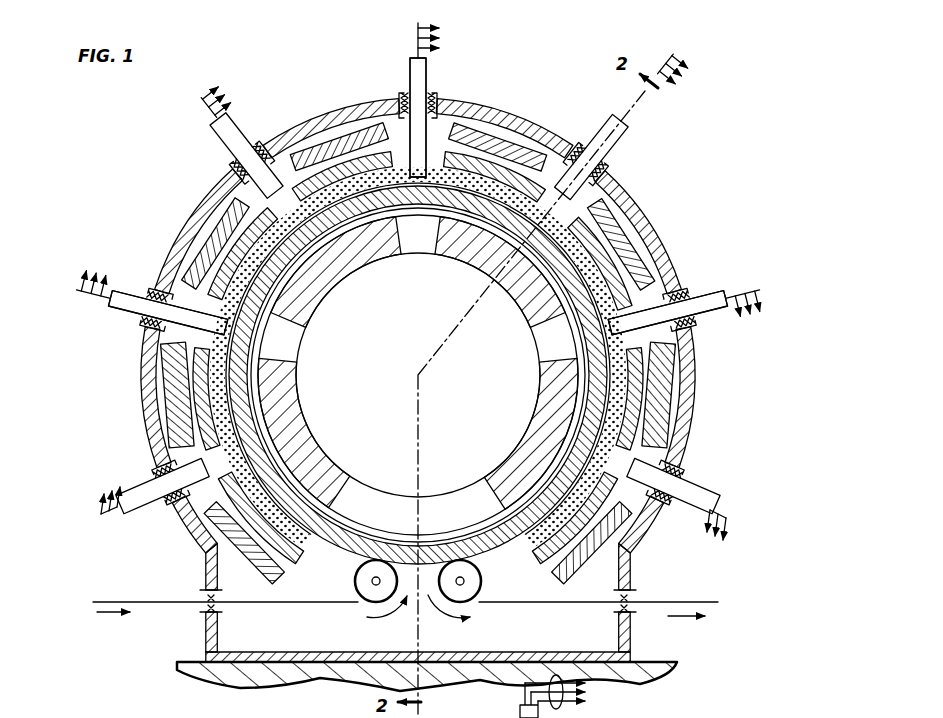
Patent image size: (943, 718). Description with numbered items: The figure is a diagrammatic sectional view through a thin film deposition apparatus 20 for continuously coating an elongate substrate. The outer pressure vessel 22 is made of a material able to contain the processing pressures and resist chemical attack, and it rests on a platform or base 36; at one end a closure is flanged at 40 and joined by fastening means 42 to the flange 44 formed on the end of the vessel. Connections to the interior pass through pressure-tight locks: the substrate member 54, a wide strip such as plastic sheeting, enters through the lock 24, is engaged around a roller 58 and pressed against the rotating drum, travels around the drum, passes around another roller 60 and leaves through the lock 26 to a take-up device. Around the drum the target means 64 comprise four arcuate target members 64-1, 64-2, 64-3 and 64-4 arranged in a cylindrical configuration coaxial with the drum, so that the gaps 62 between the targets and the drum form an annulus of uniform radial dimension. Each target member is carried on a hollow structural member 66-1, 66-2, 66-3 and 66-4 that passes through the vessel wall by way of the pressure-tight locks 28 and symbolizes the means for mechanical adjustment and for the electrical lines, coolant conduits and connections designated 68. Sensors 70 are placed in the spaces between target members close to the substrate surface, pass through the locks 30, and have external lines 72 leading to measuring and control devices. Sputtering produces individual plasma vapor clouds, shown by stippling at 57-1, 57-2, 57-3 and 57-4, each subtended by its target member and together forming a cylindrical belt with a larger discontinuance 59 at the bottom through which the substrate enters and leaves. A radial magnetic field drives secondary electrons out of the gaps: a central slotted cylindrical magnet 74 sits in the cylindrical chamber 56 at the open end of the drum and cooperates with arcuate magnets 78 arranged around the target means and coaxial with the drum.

The apparatus 20 is at (745, 165).
The pressure vessel 22 is at (511, 118).
The pressure-tight lock 24 is at (200, 606).
The pressure-tight lock 26 is at (640, 612).
The pressure-tight locks 28 is at (240, 162).
The pressure-tight locks 30 is at (408, 92).
The base 36 is at (200, 658).
The flange 40 is at (412, 696).
The fastening means 42 is at (349, 711).
The flange 44 is at (304, 717).
The substrate member 54 is at (108, 600).
The cylindrical chamber 56 is at (360, 218).
The plasma vapor cloud segment 57-1 is at (306, 468).
The plasma vapor cloud segment 57-2 is at (342, 268).
The plasma vapor cloud segment 57-3 is at (507, 268).
The plasma vapor cloud segment 57-4 is at (540, 440).
The roller 58 is at (372, 600).
The discontinuance 59 is at (317, 563).
The roller 60 is at (470, 598).
The gaps 62 is at (631, 212).
The target means 64 is at (240, 234).
The arcuate target member 64-1 is at (193, 378).
The arcuate target member 64-2 is at (228, 252).
The arcuate target member 64-3 is at (480, 160).
The arcuate target member 64-4 is at (643, 397).
The structural member 66-1 is at (168, 502).
The structural member 66-2 is at (247, 130).
The structural member 66-3 is at (604, 138).
The structural member 66-4 is at (693, 515).
The electrical lines, conduits and mechanical connections 68 is at (225, 90).
The sensors 70 is at (432, 72).
The external lines 72 is at (444, 30).
The central slotted cylindrical magnet 74 is at (375, 392).
The arcuate magnets 78 is at (378, 123).